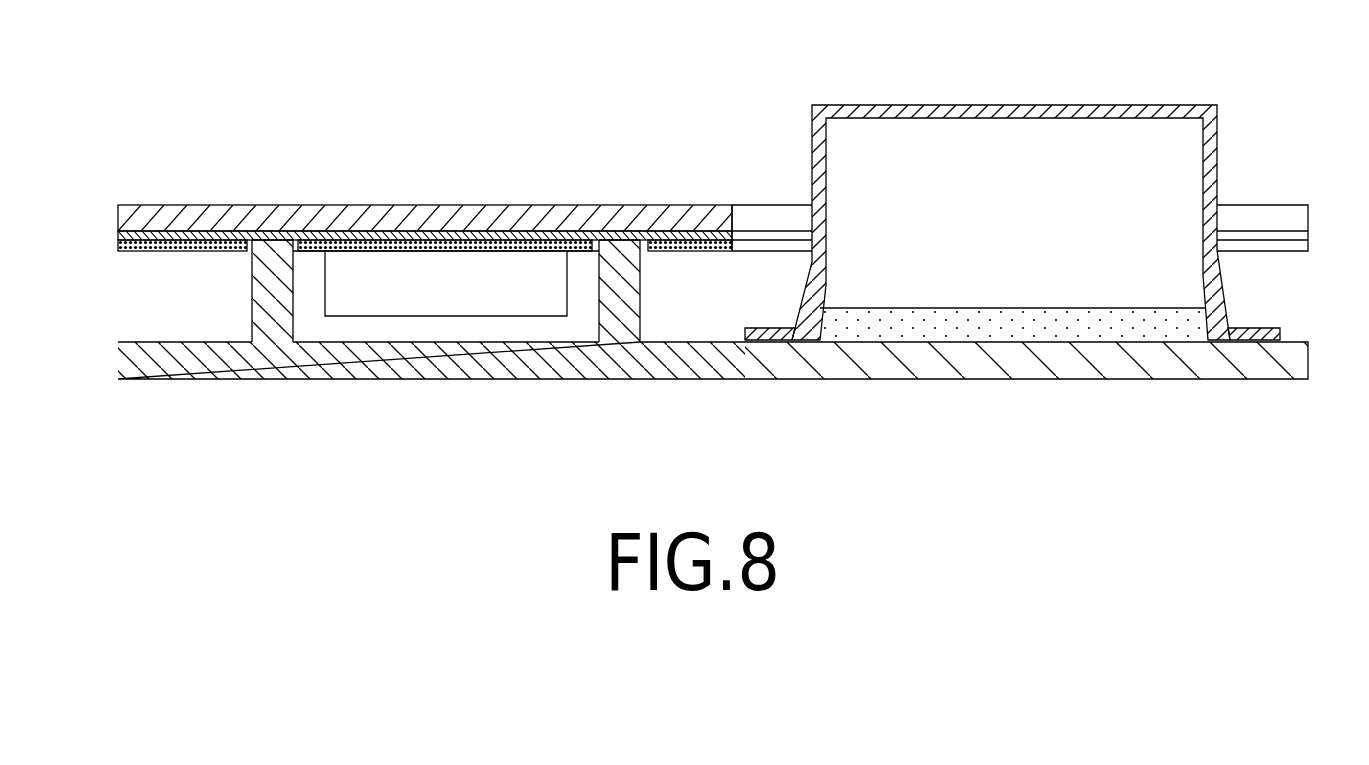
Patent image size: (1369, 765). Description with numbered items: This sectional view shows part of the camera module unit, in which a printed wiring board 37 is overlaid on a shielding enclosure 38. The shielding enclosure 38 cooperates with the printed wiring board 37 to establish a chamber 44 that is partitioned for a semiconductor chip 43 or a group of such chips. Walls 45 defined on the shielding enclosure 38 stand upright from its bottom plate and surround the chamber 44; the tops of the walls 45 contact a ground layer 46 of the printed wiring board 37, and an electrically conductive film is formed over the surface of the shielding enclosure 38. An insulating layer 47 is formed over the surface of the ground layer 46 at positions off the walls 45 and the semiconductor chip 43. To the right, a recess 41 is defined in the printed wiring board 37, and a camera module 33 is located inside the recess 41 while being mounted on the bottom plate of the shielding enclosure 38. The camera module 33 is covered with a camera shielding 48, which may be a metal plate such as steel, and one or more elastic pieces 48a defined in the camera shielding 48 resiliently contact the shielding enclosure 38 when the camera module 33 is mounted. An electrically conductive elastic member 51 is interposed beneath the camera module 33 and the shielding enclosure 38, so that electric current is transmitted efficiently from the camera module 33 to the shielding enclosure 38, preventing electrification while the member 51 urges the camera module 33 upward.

The camera module 33 is at (1183, 162).
The printed wiring board 37 is at (193, 205).
The shielding enclosure 38 is at (167, 380).
The recess 41 is at (742, 218).
The semiconductor chip 43 is at (492, 315).
The chamber 44 is at (397, 328).
The wall 45 is at (252, 303).
The ground layer 46 is at (140, 250).
The insulating layer 47 is at (158, 251).
The camera shielding 48 is at (1147, 105).
The elastic piece 48a is at (778, 338).
The electrically conductive elastic member 51 is at (1068, 328).